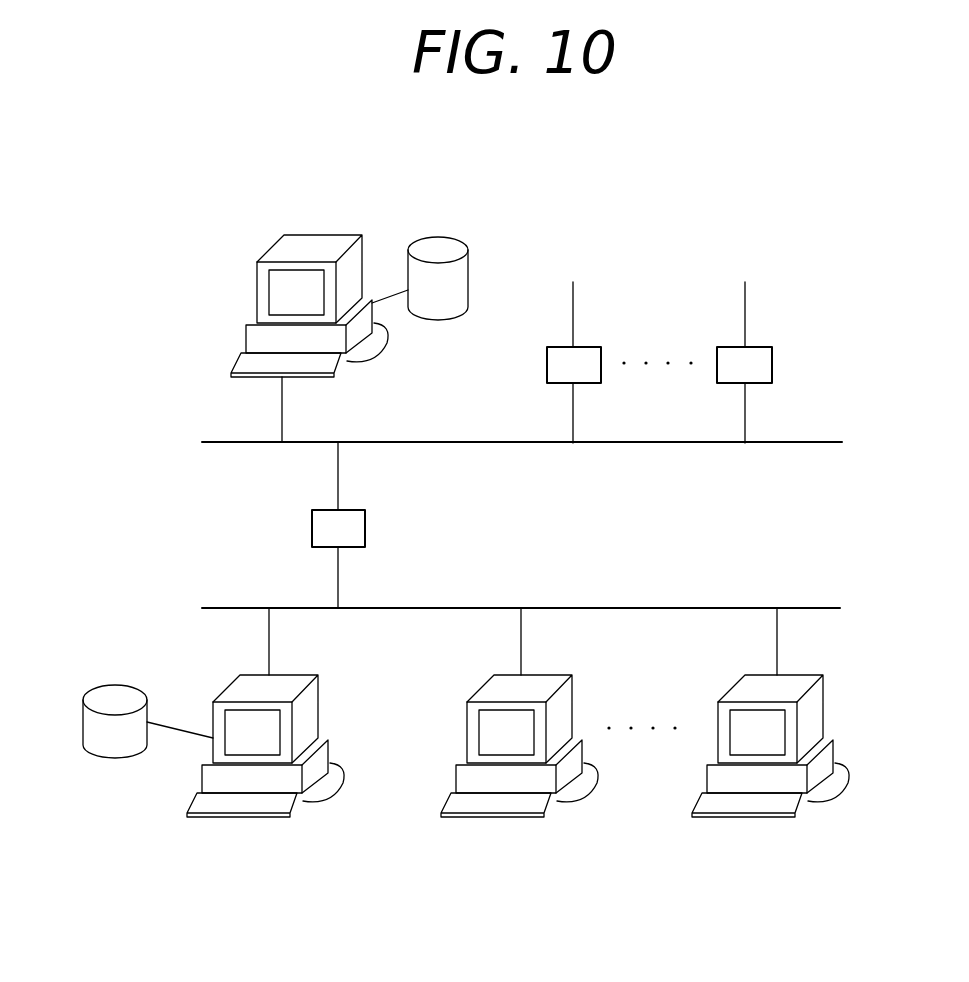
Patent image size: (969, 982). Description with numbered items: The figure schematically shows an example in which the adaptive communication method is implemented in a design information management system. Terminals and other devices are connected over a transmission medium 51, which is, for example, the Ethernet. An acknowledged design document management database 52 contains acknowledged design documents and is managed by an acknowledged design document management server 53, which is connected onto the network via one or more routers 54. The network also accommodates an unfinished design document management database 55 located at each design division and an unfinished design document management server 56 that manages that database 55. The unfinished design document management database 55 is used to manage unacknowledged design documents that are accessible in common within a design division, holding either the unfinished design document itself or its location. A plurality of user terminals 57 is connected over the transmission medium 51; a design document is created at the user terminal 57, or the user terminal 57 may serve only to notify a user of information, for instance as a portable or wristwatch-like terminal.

The transmission medium 51 is at (420, 442).
The acknowledged design document management database 52 is at (460, 232).
The acknowledged design document management server 53 is at (327, 236).
The router 54 is at (365, 523).
The unfinished design document management database 55 is at (90, 762).
The unfinished design document management server 56 is at (285, 817).
The user terminal 57 is at (538, 817).